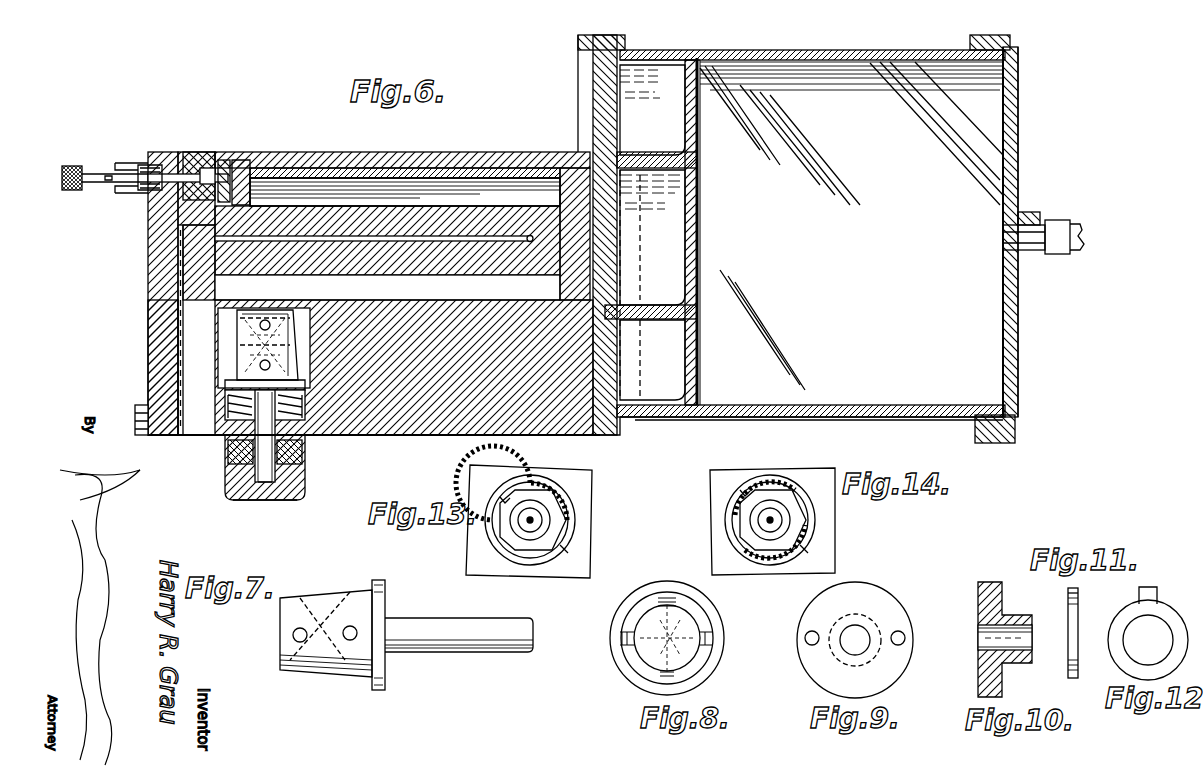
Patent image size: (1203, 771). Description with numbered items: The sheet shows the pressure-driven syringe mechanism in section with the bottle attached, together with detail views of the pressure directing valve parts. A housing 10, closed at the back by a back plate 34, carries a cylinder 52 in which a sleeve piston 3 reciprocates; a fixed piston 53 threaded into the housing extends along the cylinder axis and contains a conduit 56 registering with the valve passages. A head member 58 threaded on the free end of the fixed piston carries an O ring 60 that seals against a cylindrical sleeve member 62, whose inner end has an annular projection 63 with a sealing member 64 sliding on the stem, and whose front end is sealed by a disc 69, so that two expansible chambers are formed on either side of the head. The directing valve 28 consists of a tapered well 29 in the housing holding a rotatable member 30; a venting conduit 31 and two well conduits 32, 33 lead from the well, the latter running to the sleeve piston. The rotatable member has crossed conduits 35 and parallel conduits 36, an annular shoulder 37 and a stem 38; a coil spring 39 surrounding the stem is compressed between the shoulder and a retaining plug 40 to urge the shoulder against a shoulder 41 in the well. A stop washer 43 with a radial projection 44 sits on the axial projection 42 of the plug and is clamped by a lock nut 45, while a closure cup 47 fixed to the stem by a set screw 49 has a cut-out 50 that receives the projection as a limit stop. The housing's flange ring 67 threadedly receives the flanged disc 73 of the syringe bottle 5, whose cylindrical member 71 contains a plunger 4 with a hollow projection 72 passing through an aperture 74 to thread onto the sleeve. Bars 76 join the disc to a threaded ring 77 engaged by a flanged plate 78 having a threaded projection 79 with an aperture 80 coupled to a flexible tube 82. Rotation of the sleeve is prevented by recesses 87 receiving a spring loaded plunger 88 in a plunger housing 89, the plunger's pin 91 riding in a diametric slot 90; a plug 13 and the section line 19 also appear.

In FIG. 6, the sleeve piston 3 is at (436, 194).
In FIG. 6, the plunger 4 is at (707, 258).
In FIG. 6, the syringe bottle 5 is at (810, 36).
In FIG. 6, the housing 10 is at (492, 166).
In FIG. 6, the plug 13 is at (215, 450).
In FIG. 6, the section line 19 is at (160, 365).
In FIG. 6, the directing valve 28 is at (355, 270).
In FIG. 6, the well 29 is at (225, 348).
In FIG. 6, the rotatable member 30 is at (237, 325).
In FIG. 7, the rotatable member 30 is at (280, 648).
In FIG. 8, the rotatable member 30 is at (690, 658).
In FIG. 6, the venting conduit 31 is at (143, 436).
In FIG. 6, the well conduit 32 is at (225, 385).
In FIG. 6, the well conduit 33 is at (240, 318).
In FIG. 6, the housing back plate 34 is at (148, 234).
In FIG. 7, the crossed conduits 35 is at (345, 608).
In FIG. 8, the crossed conduits 35 is at (674, 598).
In FIG. 7, the parallel conduits 36 is at (348, 642).
In FIG. 8, the parallel conduits 36 is at (620, 640).
In FIG. 7, the annular shoulder 37 is at (380, 692).
In FIG. 8, the annular shoulder 37 is at (620, 672).
In FIG. 6, the stem 38 is at (304, 478).
In FIG. 13, the stem 38 is at (528, 532).
In FIG. 14, the stem 38 is at (790, 520).
In FIG. 7, the stem 38 is at (450, 648).
In FIG. 6, the coil spring 39 is at (395, 437).
In FIG. 6, the retaining plug 40 is at (225, 440).
In FIG. 13, the retaining plug 40 is at (552, 490).
In FIG. 14, the retaining plug 40 is at (735, 522).
In FIG. 9, the retaining plug 40 is at (900, 656).
In FIG. 10, the retaining plug 40 is at (978, 592).
In FIG. 6, the shoulder 41 is at (420, 437).
In FIG. 6, the axial projection 42 is at (228, 445).
In FIG. 9, the axial projection 42 is at (876, 652).
In FIG. 10, the axial projection 42 is at (1020, 612).
In FIG. 13, the stop washer 43 is at (535, 490).
In FIG. 14, the stop washer 43 is at (732, 505).
In FIG. 11, the stop washer 43 is at (1068, 676).
In FIG. 12, the stop washer 43 is at (1122, 645).
In FIG. 13, the radial projection 44 is at (500, 495).
In FIG. 14, the radial projection 44 is at (742, 488).
In FIG. 11, the radial projection 44 is at (1080, 592).
In FIG. 12, the radial projection 44 is at (1149, 596).
In FIG. 6, the lock nut 45 is at (230, 450).
In FIG. 13, the lock nut 45 is at (540, 558).
In FIG. 14, the lock nut 45 is at (770, 490).
In FIG. 6, the closure cup 47 is at (290, 502).
In FIG. 13, the closure cup 47 is at (495, 557).
In FIG. 14, the closure cup 47 is at (805, 540).
In FIG. 6, the set screw 49 is at (262, 492).
In FIG. 13, the cut-out 50 is at (556, 485).
In FIG. 14, the cut-out 50 is at (750, 558).
In FIG. 6, the cylinder 52 is at (386, 168).
In FIG. 6, the fixed piston 53 is at (378, 180).
In FIG. 6, the conduit 56 is at (387, 285).
In FIG. 6, the head member 58 is at (598, 280).
In FIG. 6, the O ring 60 is at (565, 178).
In FIG. 6, the cylindrical sleeve member 62 is at (312, 170).
In FIG. 6, the annular projection 63 is at (248, 168).
In FIG. 6, the sealing member 64 is at (228, 162).
In FIG. 6, the flange ring 67 is at (622, 42).
In FIG. 6, the disc 69 is at (618, 226).
In FIG. 6, the cylindrical member 71 is at (992, 138).
In FIG. 6, the hollow projection 72 is at (658, 152).
In FIG. 6, the flanged disc 73 is at (598, 92).
In FIG. 6, the aperture 74 is at (620, 340).
In FIG. 6, the bars 76 is at (718, 58).
In FIG. 6, the threaded ring 77 is at (975, 45).
In FIG. 6, the flanged plate 78 is at (1012, 175).
In FIG. 6, the threaded projection 79 is at (1032, 215).
In FIG. 6, the aperture 80 is at (1010, 236).
In FIG. 6, the flexible tube 82 is at (1078, 222).
In FIG. 6, the recesses 87 is at (207, 168).
In FIG. 6, the spring loaded plunger 88 is at (205, 176).
In FIG. 6, the plunger housing 89 is at (148, 164).
In FIG. 6, the diametric slot 90 is at (128, 164).
In FIG. 6, the pin 91 is at (110, 182).